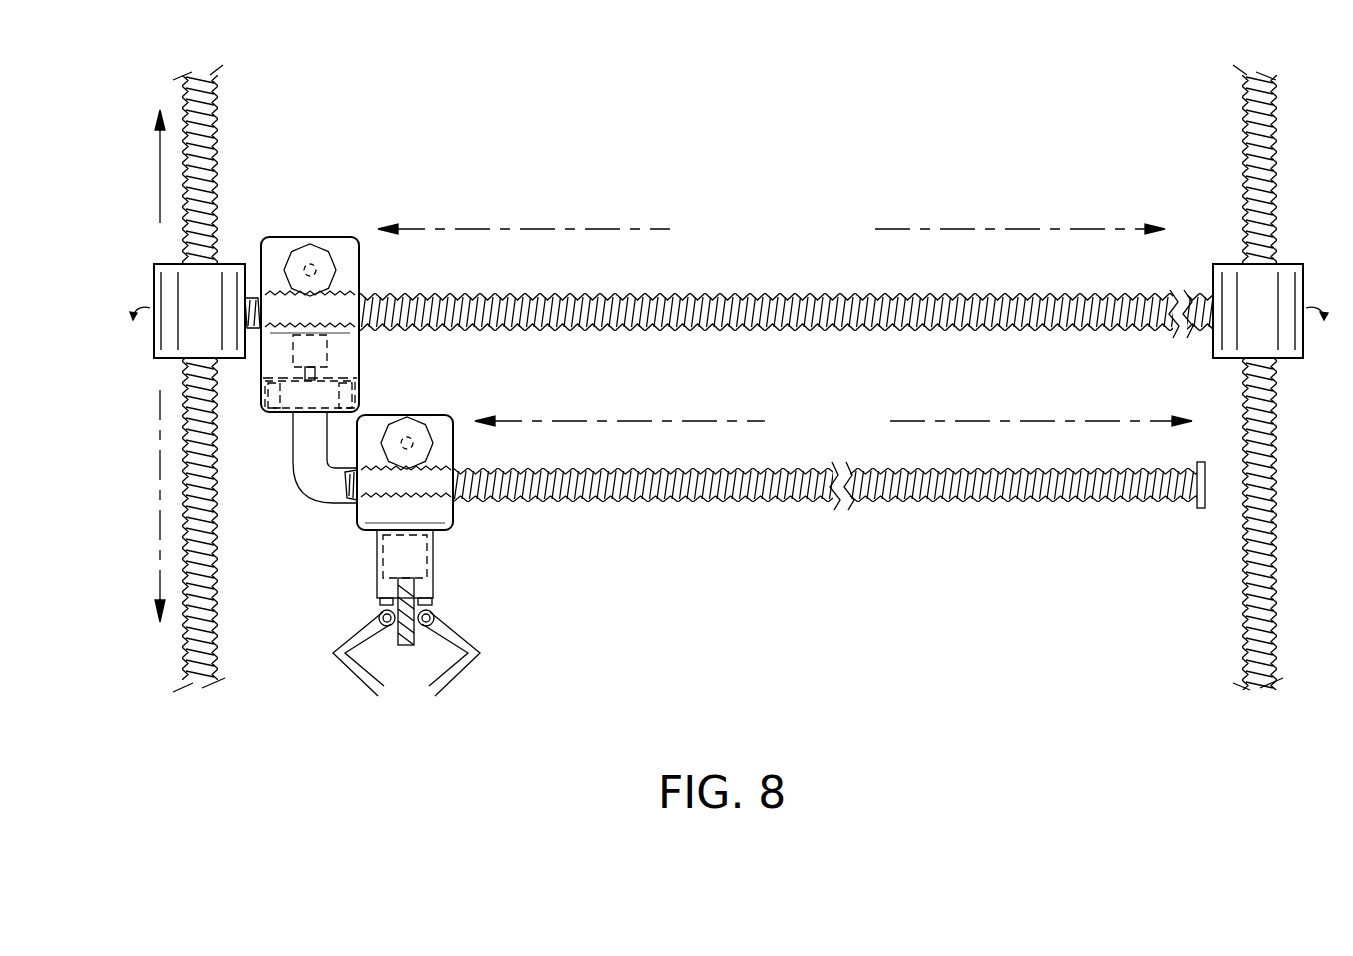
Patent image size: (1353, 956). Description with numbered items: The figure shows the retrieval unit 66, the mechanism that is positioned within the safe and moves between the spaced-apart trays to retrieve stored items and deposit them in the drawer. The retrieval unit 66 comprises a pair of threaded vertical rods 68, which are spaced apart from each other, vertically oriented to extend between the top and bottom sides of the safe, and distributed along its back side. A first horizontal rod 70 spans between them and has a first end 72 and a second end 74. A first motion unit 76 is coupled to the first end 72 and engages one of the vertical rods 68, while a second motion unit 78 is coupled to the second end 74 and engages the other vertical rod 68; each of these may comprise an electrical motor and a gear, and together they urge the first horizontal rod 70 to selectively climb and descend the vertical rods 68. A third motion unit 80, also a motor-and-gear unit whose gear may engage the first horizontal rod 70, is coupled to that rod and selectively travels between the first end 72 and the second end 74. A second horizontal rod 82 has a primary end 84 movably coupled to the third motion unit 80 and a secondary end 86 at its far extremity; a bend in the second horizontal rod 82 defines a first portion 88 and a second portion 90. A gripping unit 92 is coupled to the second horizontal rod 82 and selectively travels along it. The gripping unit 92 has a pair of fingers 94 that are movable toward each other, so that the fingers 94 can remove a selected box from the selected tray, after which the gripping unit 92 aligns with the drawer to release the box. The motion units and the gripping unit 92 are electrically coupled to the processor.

The retrieval unit 66 is at (715, 264).
The vertical rods 68 is at (213, 148).
The first horizontal rod 70 is at (808, 293).
The first end 72 is at (1213, 308).
The second end 74 is at (245, 312).
The first motion unit 76 is at (1293, 358).
The second motion unit 78 is at (158, 360).
The third motion unit 80 is at (326, 240).
The second horizontal rod 82 is at (727, 503).
The primary end 84 is at (317, 408).
The secondary end 86 is at (1205, 508).
The first portion 88 is at (293, 440).
The second portion 90 is at (640, 503).
The gripping unit 92 is at (453, 517).
The fingers 94 is at (432, 690).